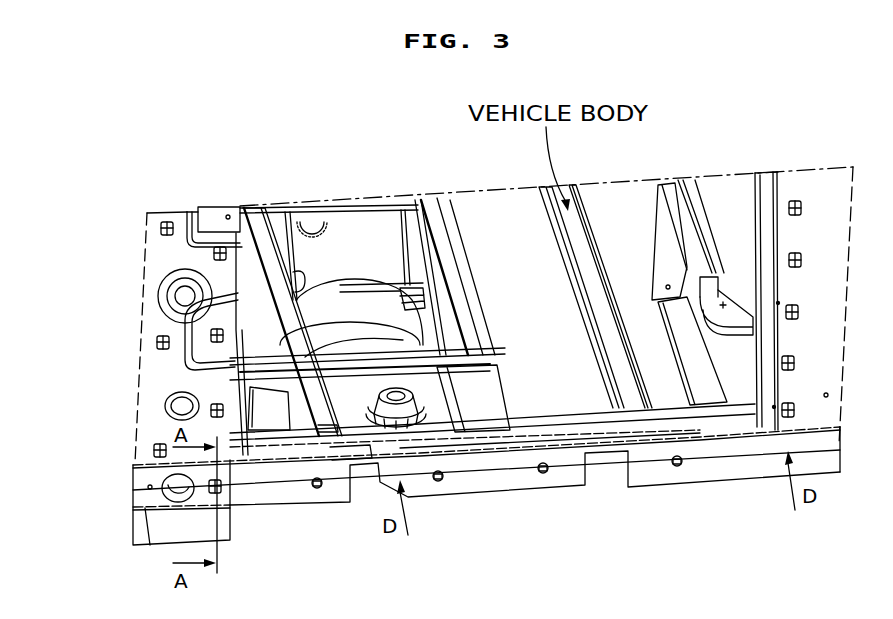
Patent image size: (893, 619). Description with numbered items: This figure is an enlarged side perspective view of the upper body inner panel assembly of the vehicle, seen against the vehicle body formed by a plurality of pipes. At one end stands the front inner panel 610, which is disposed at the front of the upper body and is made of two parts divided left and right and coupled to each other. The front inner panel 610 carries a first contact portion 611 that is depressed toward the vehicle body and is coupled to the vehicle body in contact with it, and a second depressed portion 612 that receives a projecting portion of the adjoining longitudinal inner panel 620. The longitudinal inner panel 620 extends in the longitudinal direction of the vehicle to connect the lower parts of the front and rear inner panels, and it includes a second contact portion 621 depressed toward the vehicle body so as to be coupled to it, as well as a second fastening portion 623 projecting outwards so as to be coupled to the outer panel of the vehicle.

The front inner panel 610 is at (176, 205).
The first contact portion 611 is at (177, 311).
The second depressed portion 612 is at (216, 235).
The longitudinal inner panel 620 is at (557, 495).
The second contact portion 621 is at (595, 440).
The second fastening portion 623 is at (438, 483).